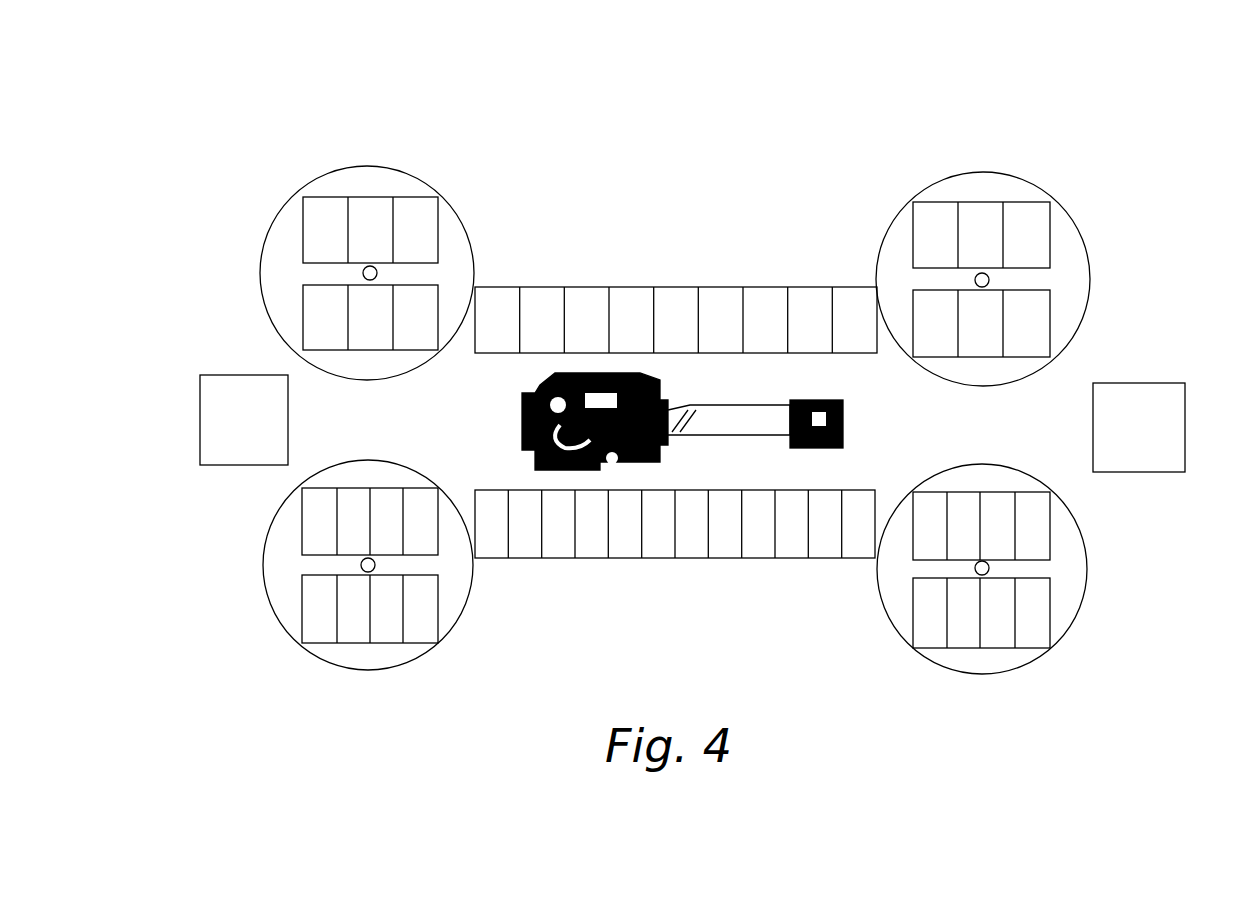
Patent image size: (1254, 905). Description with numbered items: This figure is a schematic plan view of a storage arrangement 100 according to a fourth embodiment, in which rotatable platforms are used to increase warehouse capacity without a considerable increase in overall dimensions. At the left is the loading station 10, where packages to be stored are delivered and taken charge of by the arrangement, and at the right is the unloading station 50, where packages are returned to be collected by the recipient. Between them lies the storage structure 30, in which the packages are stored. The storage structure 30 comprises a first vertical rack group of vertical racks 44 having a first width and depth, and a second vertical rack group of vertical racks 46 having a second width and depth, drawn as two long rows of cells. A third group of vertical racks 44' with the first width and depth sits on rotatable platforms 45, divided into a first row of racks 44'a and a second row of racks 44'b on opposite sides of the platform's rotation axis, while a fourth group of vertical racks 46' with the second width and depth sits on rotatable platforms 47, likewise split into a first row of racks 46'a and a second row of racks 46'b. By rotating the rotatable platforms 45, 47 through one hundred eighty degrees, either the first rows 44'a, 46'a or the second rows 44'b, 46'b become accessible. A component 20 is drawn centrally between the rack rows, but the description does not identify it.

The storage arrangement 100 is at (586, 140).
The loading station 10 is at (268, 428).
The robotic arm assembly 20 is at (853, 422).
The storage structure 30 is at (799, 222).
The unloading station 50 is at (1163, 378).
The vertical racks 44 is at (675, 572).
The vertical racks 46 is at (676, 274).
The rotatable platforms 45 is at (474, 560).
The rotatable platforms 47 is at (476, 287).
The vertical racks 44' is at (695, 614).
The first row of racks 44'a is at (623, 582).
The second row of racks 44'b is at (735, 650).
The vertical racks 46' is at (714, 213).
The first row of racks 46'a is at (666, 261).
The second row of racks 46'b is at (700, 186).